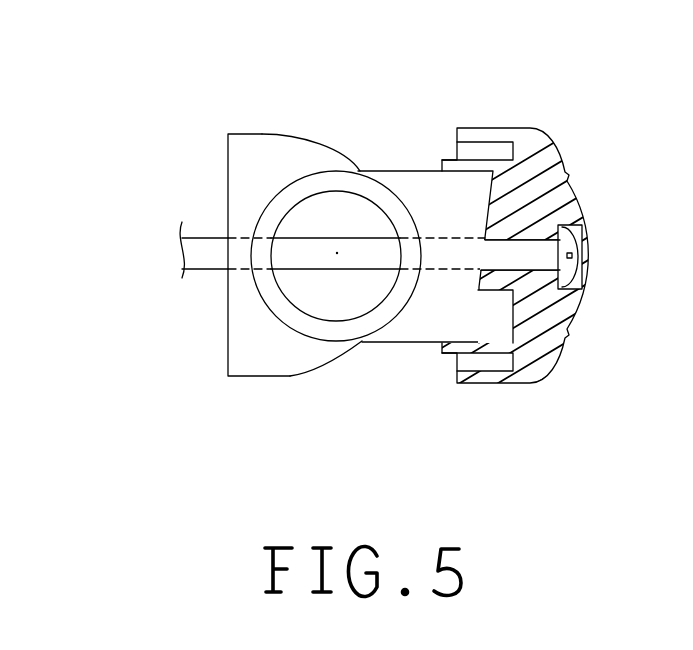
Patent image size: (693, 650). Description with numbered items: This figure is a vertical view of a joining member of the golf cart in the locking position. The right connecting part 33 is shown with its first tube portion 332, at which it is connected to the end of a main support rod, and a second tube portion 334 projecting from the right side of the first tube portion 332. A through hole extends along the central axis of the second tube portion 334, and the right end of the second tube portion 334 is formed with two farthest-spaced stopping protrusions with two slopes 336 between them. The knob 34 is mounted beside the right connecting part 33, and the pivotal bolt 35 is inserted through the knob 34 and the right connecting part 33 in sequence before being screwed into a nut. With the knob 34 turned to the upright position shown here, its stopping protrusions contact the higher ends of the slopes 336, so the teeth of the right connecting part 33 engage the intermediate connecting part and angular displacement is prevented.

The right connecting part 33 is at (295, 377).
The first tube portion 332 is at (332, 214).
The second tube portion 334 is at (405, 332).
The slopes 336 is at (478, 250).
The knob 34 is at (556, 148).
The pivotal bolt 35 is at (563, 250).